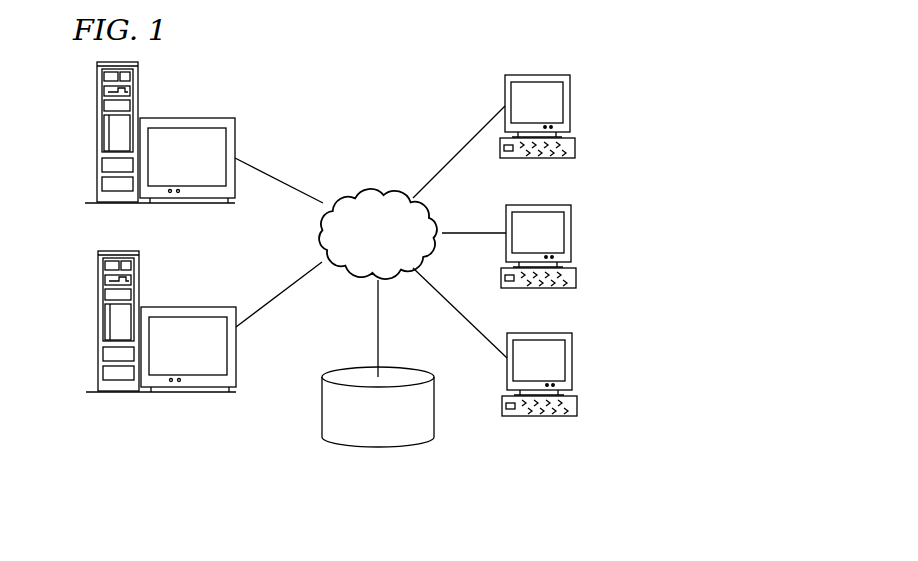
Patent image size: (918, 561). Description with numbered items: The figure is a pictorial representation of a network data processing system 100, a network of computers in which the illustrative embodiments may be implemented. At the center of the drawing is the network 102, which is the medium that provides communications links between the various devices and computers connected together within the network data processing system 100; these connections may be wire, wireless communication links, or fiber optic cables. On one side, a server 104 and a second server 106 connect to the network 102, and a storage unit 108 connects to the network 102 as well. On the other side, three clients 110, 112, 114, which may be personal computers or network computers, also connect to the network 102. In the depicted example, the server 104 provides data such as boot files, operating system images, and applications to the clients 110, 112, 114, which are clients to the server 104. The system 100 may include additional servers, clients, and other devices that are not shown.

The network data processing system 100 is at (420, 88).
The network 102 is at (351, 189).
The server 104 is at (97, 126).
The server 106 is at (98, 325).
The storage unit 108 is at (362, 452).
The client 110 is at (572, 104).
The client 112 is at (573, 234).
The client 114 is at (574, 359).